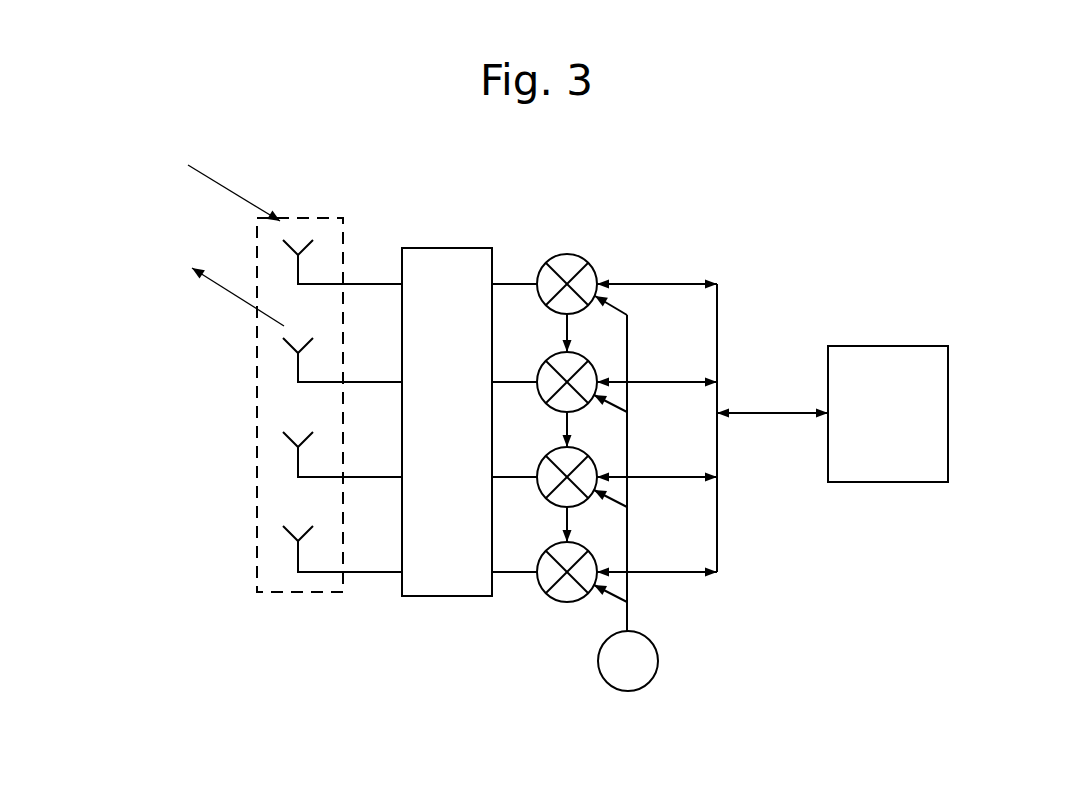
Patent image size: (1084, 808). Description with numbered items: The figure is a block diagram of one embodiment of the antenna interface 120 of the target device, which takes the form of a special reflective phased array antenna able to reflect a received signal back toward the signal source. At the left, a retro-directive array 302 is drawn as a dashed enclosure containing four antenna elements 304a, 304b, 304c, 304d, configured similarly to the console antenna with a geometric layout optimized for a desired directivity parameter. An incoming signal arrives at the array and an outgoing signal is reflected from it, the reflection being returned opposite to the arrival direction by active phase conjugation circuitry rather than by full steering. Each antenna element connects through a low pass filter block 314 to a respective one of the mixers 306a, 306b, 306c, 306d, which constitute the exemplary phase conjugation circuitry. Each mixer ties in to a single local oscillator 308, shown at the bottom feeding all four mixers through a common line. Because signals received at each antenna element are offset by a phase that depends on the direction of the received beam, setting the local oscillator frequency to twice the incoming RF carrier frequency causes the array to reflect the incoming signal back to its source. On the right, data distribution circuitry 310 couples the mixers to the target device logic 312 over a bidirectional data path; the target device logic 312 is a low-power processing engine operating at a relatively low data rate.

The antenna interface 120 is at (247, 146).
The retro-directive array 302 is at (252, 445).
The antenna element 304a is at (310, 243).
The antenna element 304b is at (310, 343).
The antenna element 304c is at (310, 434).
The antenna element 304d is at (310, 528).
The mixer 306a is at (582, 258).
The mixer 306b is at (582, 356).
The mixer 306c is at (582, 451).
The mixer 306d is at (582, 546).
The local oscillator 308 is at (598, 660).
The data distribution circuitry 310 is at (720, 318).
The target device logic 312 is at (888, 414).
The low pass filter 314 is at (447, 422).